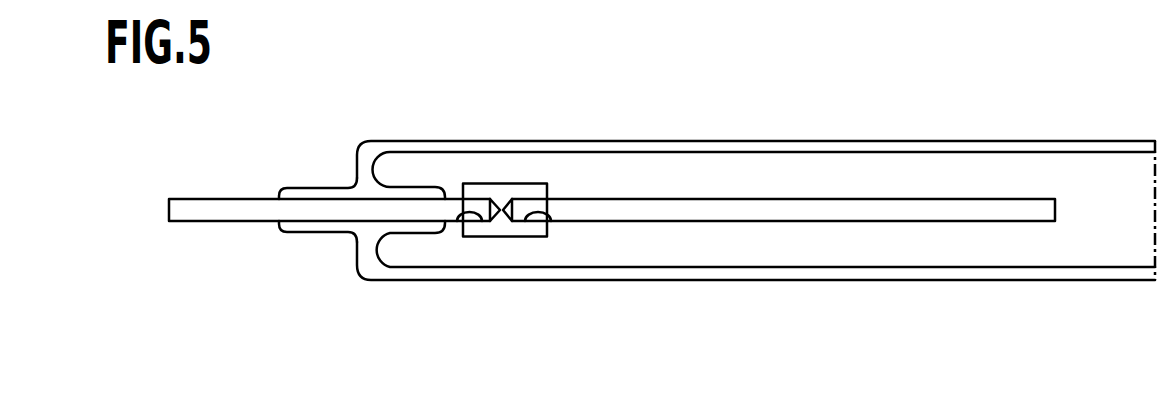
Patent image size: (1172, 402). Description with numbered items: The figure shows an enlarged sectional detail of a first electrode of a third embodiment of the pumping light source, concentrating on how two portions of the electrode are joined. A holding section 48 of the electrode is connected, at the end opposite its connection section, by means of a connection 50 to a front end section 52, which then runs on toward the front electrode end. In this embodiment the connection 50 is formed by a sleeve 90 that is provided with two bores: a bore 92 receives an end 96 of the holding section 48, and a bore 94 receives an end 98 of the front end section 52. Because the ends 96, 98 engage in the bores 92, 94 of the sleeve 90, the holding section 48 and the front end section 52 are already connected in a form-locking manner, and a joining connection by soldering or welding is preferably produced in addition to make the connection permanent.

The holding section 48 is at (415, 208).
The connection 50 is at (501, 263).
The front end section 52 is at (750, 213).
The sleeve 90 is at (503, 192).
The bore 92 is at (457, 221).
The bore 94 is at (553, 221).
The end of the holding section 96 is at (485, 206).
The end of the front end section 98 is at (527, 205).